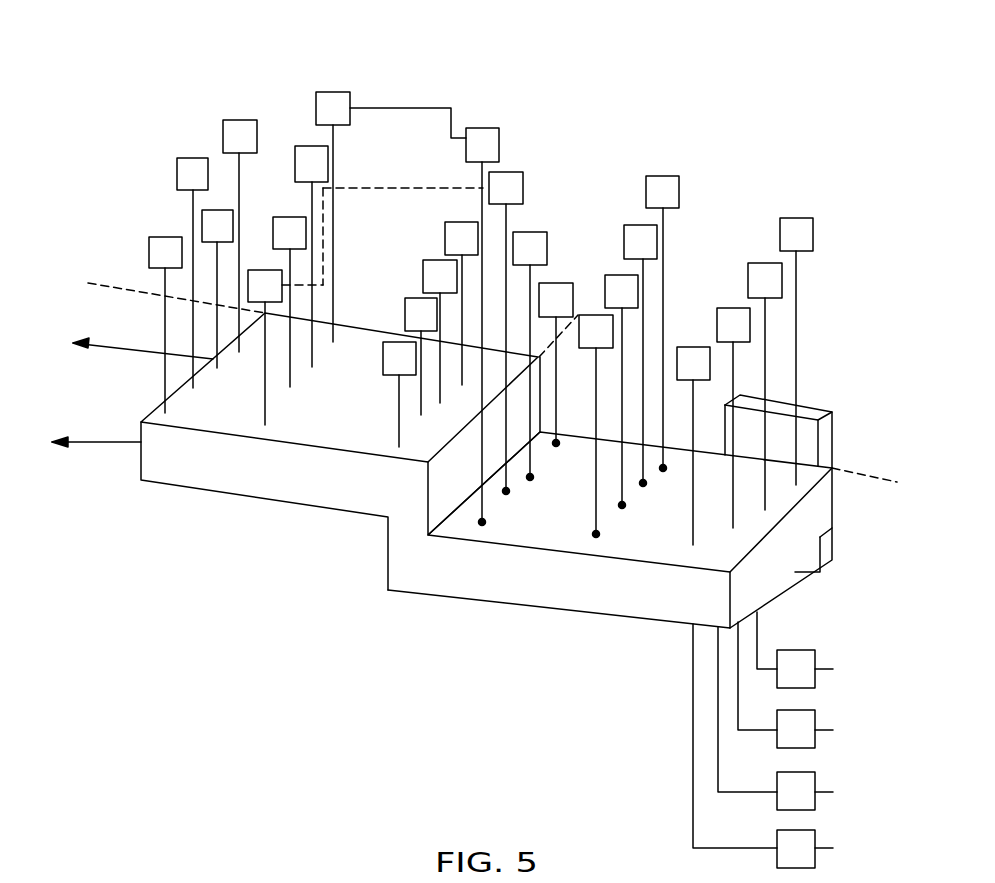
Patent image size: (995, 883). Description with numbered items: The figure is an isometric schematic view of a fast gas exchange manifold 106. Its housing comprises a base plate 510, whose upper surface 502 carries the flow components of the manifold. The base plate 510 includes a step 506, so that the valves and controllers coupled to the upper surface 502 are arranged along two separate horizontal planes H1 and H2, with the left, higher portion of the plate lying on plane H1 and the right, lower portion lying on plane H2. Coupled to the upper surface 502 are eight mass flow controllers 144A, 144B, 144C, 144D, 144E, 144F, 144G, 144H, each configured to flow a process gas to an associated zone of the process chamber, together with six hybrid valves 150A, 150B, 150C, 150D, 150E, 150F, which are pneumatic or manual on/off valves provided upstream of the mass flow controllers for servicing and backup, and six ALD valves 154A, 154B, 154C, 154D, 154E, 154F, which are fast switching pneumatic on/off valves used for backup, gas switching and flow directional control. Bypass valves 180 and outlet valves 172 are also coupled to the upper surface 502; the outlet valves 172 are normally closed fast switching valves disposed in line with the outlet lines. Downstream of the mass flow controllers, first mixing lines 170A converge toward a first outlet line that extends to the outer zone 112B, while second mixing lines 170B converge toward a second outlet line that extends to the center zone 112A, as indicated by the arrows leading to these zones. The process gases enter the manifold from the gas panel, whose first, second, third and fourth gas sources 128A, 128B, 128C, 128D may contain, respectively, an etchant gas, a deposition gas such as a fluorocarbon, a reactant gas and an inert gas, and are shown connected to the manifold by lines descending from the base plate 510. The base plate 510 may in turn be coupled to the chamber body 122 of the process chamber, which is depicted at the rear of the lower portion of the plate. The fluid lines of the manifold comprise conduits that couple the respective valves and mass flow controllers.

The fast gas exchange manifold 106 is at (98, 202).
The center zone 112A is at (120, 348).
The outer zone 112B is at (115, 442).
The chamber body 122 is at (808, 417).
The first gas source 128A is at (815, 840).
The second gas source 128B is at (815, 782).
The third gas source 128C is at (815, 720).
The fourth gas source 128D is at (815, 660).
The mass flow controller 144A is at (485, 127).
The mass flow controller 144B is at (517, 171).
The mass flow controller 144C is at (530, 231).
The mass flow controller 144D is at (548, 282).
The mass flow controller 144E is at (388, 341).
The mass flow controller 144F is at (410, 297).
The mass flow controller 144G is at (433, 259).
The mass flow controller 144H is at (453, 221).
The hybrid valve 150A is at (700, 346).
The hybrid valve 150B is at (730, 307).
The hybrid valve 150C is at (760, 262).
The hybrid valve 150D is at (800, 217).
The hybrid valve 150E is at (219, 209).
The hybrid valve 150F is at (176, 174).
The ALD valve 154A is at (600, 314).
The ALD valve 154B is at (620, 274).
The ALD valve 154C is at (640, 224).
The ALD valve 154D is at (668, 175).
The ALD valve 154E is at (287, 216).
The ALD valve 154F is at (297, 145).
The first mixing lines 170A is at (390, 107).
The second mixing lines 170B is at (350, 185).
The outlet valve 172 is at (267, 269).
The bypass valve 180 is at (237, 118).
The upper surface 502 is at (486, 484).
The step 506 is at (413, 500).
The base plate 510 is at (217, 493).
The horizontal plane H1 is at (107, 283).
The horizontal plane H2 is at (848, 470).